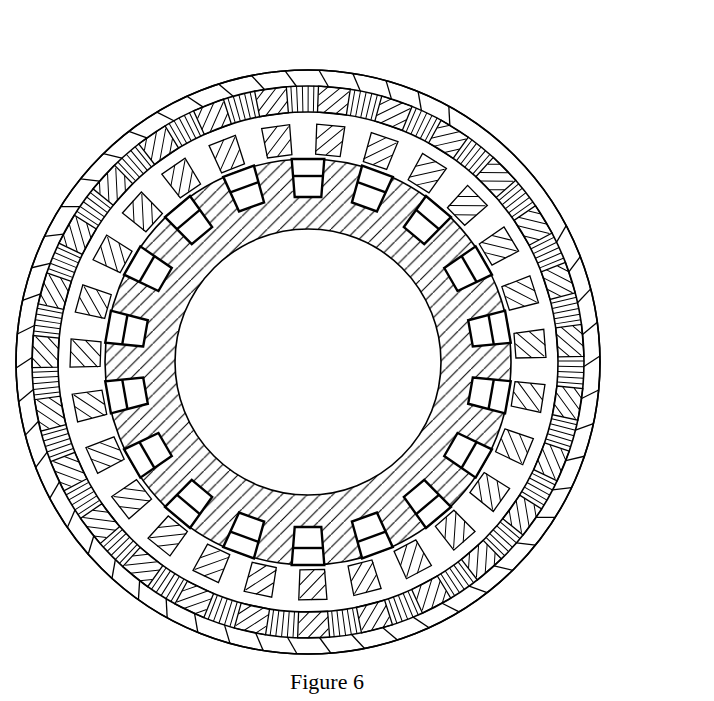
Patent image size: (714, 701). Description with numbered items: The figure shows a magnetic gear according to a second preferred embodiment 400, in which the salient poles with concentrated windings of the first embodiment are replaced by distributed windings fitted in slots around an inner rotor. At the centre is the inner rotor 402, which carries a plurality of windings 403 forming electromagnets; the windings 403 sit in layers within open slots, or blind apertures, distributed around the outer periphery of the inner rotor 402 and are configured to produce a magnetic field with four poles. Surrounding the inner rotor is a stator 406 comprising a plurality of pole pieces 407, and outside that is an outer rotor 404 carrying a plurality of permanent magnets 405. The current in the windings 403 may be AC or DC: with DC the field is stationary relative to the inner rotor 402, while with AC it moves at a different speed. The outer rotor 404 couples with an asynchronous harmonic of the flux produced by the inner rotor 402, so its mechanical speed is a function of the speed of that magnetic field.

The second preferred embodiment 400 is at (500, 590).
The inner rotor 402 is at (267, 230).
The windings 403 is at (188, 290).
The outer rotor 404 is at (529, 163).
The permanent magnets 405 is at (547, 225).
The stator 406 is at (311, 137).
The pole pieces 407 is at (385, 147).